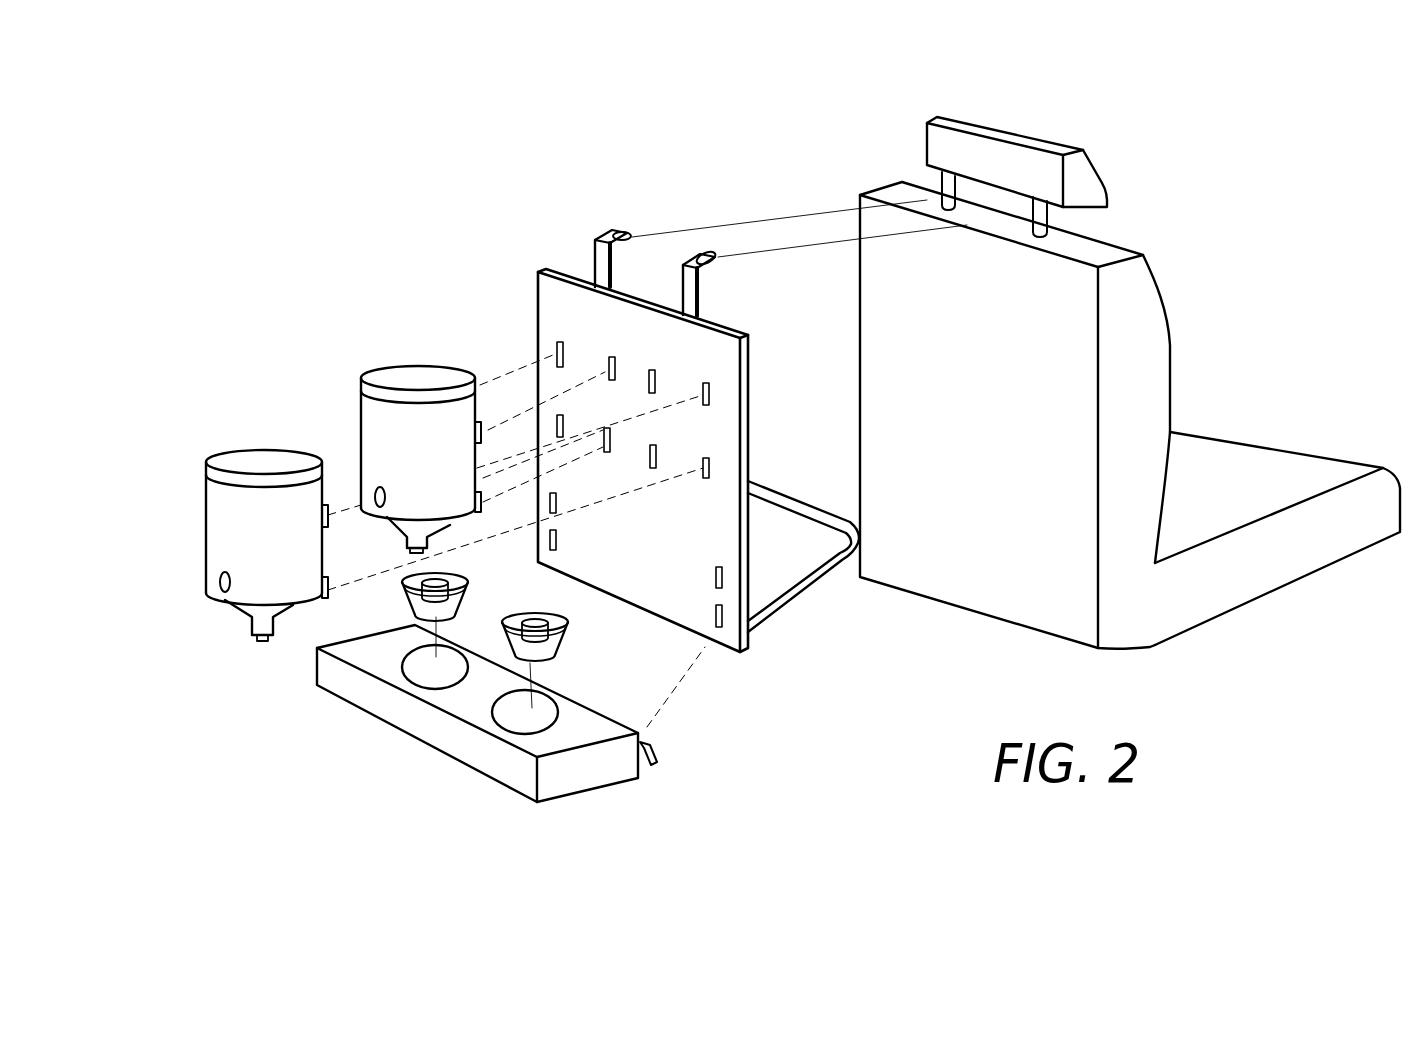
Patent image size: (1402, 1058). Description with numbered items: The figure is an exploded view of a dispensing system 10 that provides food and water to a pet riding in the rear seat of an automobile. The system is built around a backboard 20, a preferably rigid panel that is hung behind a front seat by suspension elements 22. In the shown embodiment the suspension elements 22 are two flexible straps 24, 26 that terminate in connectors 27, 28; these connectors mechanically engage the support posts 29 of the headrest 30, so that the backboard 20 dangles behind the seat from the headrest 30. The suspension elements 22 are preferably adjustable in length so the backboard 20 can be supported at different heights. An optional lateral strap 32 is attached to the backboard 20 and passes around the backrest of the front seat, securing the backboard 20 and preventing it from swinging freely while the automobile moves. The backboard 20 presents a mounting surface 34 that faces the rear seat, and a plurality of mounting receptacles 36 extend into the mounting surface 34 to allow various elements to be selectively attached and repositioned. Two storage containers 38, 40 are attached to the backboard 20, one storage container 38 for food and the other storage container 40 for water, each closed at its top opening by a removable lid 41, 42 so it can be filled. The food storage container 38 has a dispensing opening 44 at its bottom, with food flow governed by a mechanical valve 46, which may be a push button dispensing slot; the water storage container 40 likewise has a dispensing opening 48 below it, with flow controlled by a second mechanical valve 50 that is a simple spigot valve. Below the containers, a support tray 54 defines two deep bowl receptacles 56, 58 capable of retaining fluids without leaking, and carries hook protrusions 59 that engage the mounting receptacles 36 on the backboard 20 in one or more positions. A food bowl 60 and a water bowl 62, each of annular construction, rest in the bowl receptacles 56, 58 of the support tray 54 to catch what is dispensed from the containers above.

The dispensing system 10 is at (533, 182).
The backboard 20 is at (552, 313).
The suspension elements 22 is at (613, 272).
The flexible strap 24 is at (597, 258).
The flexible strap 26 is at (698, 290).
The connector 27 is at (623, 230).
The connector 28 is at (713, 250).
The support posts 29 is at (950, 187).
The headrest 30 is at (960, 127).
The lateral strap 32 is at (822, 573).
The mounting surface 34 is at (687, 602).
The mounting receptacles 36 is at (713, 405).
The food storage container 38 is at (215, 513).
The water storage container 40 is at (378, 442).
The removable lid 41 is at (423, 382).
The removable lid 42 is at (255, 458).
The dispensing opening 44 is at (262, 633).
The mechanical valve 46 is at (220, 580).
The dispensing opening 48 is at (418, 552).
The second mechanical valve 50 is at (387, 498).
The support tray 54 is at (593, 768).
The bowl receptacle 56 is at (420, 675).
The bowl receptacle 58 is at (513, 723).
The hook protrusions 59 is at (657, 750).
The food bowl 60 is at (418, 607).
The water bowl 62 is at (535, 648).